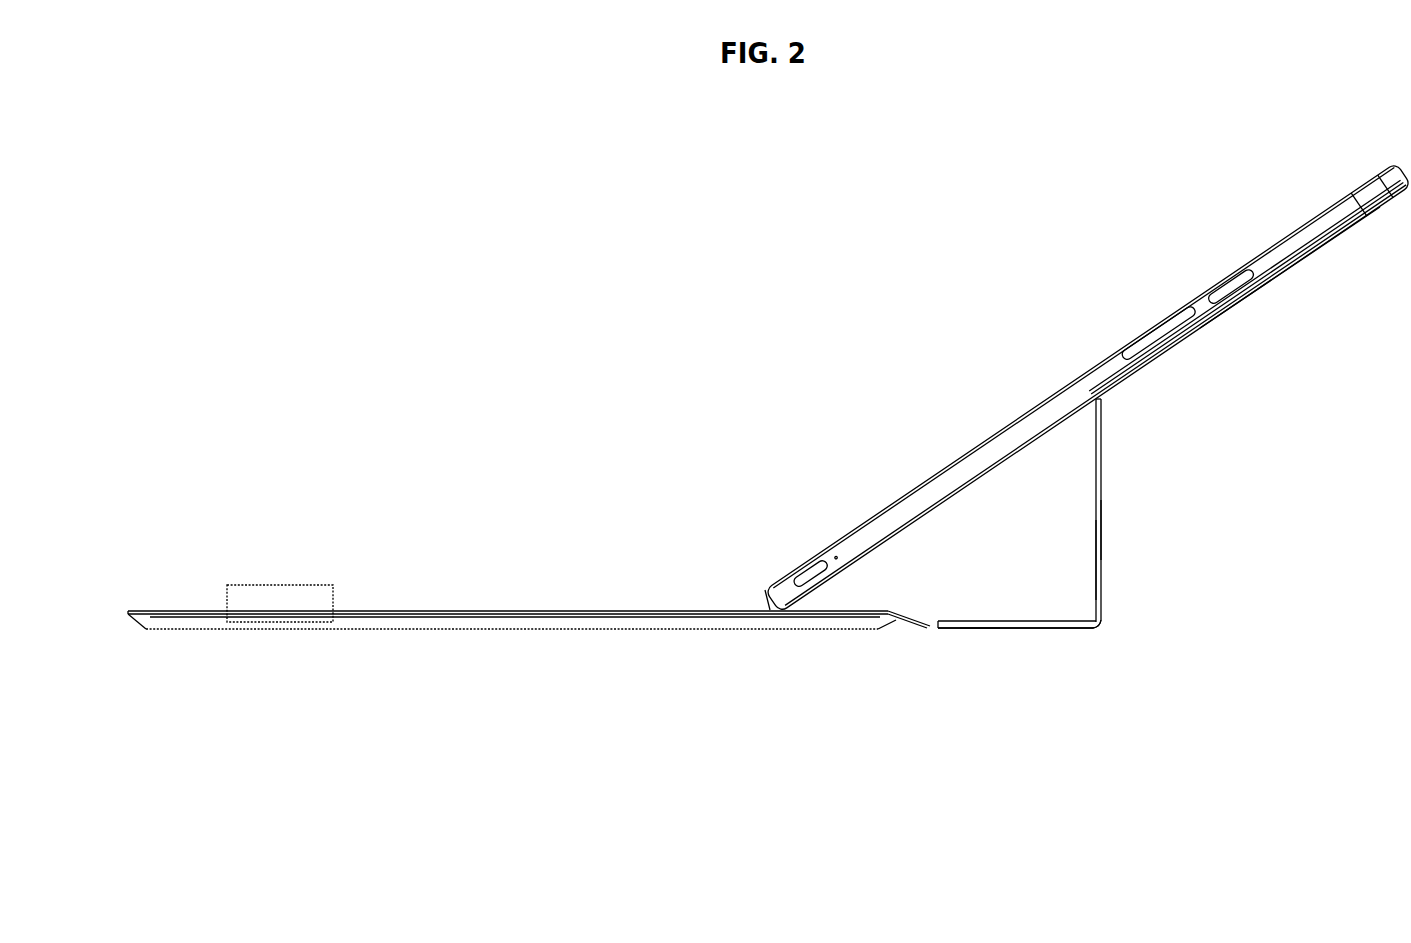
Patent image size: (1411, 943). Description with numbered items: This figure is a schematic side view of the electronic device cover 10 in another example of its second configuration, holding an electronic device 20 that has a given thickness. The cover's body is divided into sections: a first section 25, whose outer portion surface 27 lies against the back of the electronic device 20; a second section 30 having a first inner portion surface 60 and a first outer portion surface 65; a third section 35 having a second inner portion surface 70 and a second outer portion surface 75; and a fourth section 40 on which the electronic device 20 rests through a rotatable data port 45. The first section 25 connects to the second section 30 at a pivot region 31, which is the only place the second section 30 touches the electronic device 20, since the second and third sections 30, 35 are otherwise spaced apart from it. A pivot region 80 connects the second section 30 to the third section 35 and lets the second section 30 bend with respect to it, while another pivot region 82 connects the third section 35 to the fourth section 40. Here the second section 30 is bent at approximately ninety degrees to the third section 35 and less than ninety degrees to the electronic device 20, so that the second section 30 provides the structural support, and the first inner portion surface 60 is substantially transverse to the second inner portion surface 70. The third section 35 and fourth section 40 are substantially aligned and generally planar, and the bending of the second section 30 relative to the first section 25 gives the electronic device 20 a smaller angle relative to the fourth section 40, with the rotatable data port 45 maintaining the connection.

The electronic device cover 10 is at (1238, 352).
The electronic device 20 is at (1394, 156).
The first section 25 is at (1312, 270).
The outer portion surface 27 is at (1272, 285).
The second section 30 is at (1135, 511).
The pivot region 31 is at (1098, 400).
The third section 35 is at (966, 647).
The fourth section 40 is at (529, 660).
The data port 45 is at (766, 614).
The first inner portion surface 60 is at (1093, 560).
The first outer portion surface 65 is at (1102, 529).
The second inner portion surface 70 is at (997, 620).
The second outer portion surface 75 is at (1042, 630).
The pivot region 80 is at (1095, 626).
The pivot region 82 is at (908, 622).